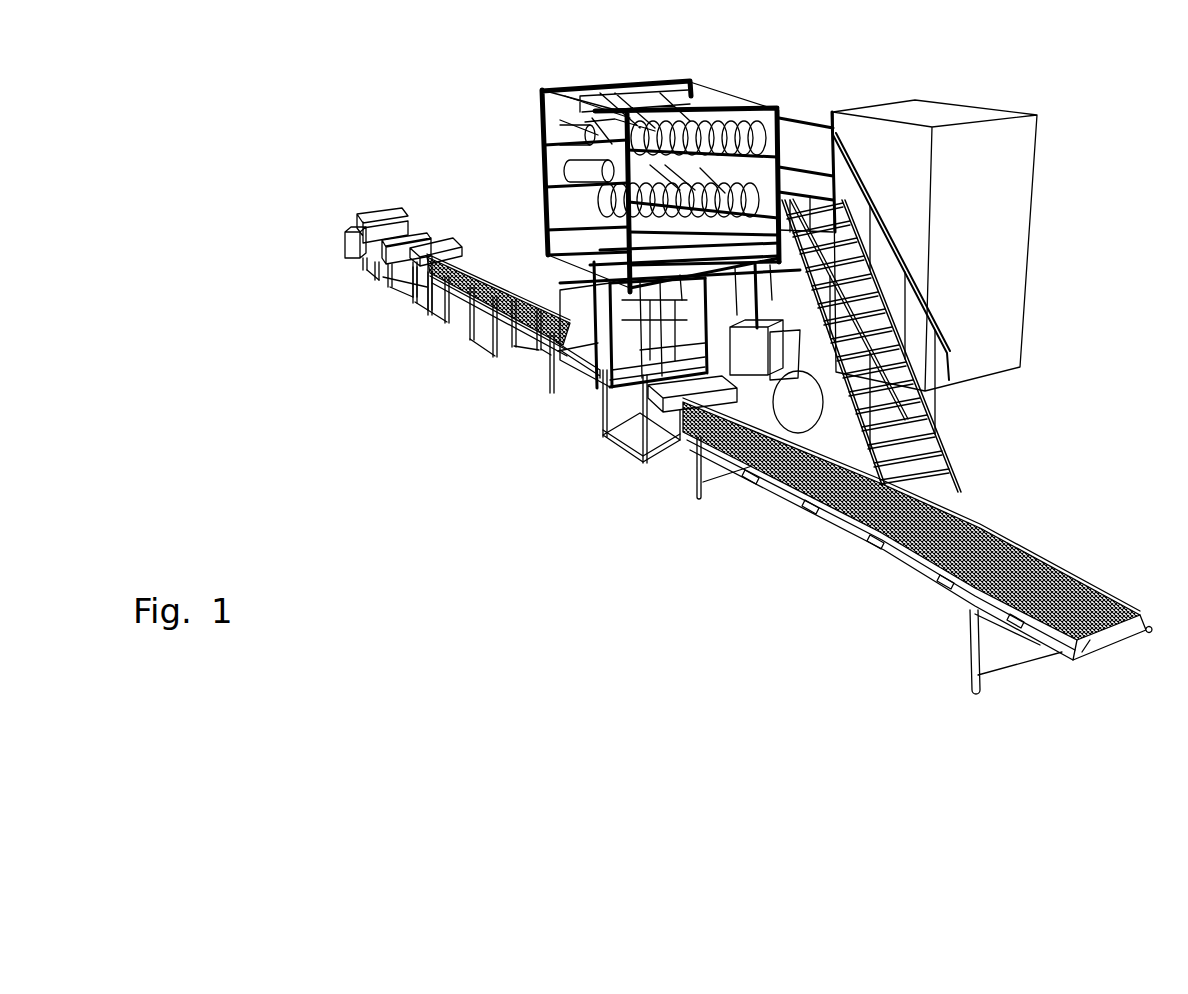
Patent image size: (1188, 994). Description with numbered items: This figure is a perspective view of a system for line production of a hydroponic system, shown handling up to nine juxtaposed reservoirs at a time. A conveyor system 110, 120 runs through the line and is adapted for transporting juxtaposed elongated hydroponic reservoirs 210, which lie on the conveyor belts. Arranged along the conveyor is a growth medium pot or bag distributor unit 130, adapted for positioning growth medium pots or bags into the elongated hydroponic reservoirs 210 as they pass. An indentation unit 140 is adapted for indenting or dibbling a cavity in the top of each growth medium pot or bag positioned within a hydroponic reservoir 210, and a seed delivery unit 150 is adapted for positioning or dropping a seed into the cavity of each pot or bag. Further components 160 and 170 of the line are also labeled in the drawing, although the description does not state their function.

The conveyor system 110 is at (1142, 607).
The conveyor system 120 is at (453, 296).
The growth medium pot or bag distributor unit 130 is at (578, 372).
The indentation unit 140 is at (527, 333).
The seed delivery unit 150 is at (350, 265).
The transfer unit 160 is at (670, 433).
The feed head 170 is at (437, 247).
The elongated hydroponic reservoirs 210 is at (478, 252).